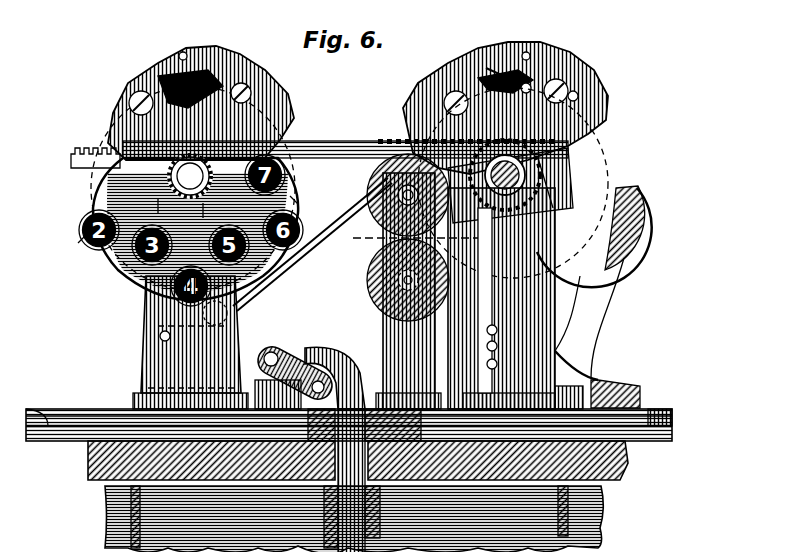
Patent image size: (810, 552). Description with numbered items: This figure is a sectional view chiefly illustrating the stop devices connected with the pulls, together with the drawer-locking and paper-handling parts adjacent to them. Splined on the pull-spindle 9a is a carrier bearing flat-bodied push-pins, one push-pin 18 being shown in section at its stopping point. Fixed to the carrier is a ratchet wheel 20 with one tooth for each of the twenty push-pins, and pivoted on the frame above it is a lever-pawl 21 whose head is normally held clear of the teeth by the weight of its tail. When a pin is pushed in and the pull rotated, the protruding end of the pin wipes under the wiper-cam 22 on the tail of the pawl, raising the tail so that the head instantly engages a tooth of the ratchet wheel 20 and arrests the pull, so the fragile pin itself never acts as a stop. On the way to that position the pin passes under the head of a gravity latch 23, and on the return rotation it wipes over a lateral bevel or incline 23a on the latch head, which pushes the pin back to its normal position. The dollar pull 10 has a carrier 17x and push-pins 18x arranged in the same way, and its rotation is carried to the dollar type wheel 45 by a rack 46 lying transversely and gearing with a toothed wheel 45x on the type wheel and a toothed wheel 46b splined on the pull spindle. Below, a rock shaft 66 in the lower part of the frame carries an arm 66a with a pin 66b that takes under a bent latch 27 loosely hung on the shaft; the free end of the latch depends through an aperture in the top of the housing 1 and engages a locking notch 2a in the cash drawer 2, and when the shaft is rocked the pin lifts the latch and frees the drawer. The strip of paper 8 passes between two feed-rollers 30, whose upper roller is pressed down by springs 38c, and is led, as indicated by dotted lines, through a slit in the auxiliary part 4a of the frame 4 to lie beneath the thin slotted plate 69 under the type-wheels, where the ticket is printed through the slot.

The housing 1 is at (612, 452).
The cash drawer 2 is at (354, 519).
The locking notch 2a is at (322, 486).
The frame 4 is at (140, 372).
The auxiliary part of the frame 4a is at (470, 318).
The strip of paper 8 is at (413, 235).
The pull-spindle 9a is at (512, 165).
The dollar pull 10 is at (190, 176).
The carrier 17x is at (148, 207).
The push-pin 18 is at (490, 62).
The push-pins 18x is at (190, 227).
The ratchet wheel 20 is at (562, 130).
The lever-pawl 21 is at (128, 82).
The wiper-cam 22 is at (198, 64).
The gravity latch 23 is at (230, 74).
The lateral bevel or incline 23a is at (172, 68).
The bent latch 27 is at (364, 480).
The feed-rollers 30 is at (372, 172).
The springs 38c is at (302, 242).
The dollar type wheel 45 is at (546, 188).
The toothed wheel 45x is at (540, 208).
The rack 46 is at (324, 134).
The toothed wheel 46b is at (160, 179).
The rock shaft 66 is at (263, 346).
The arm 66a is at (294, 372).
The pin 66b is at (340, 352).
The apertured or slotted plate 69 is at (488, 232).